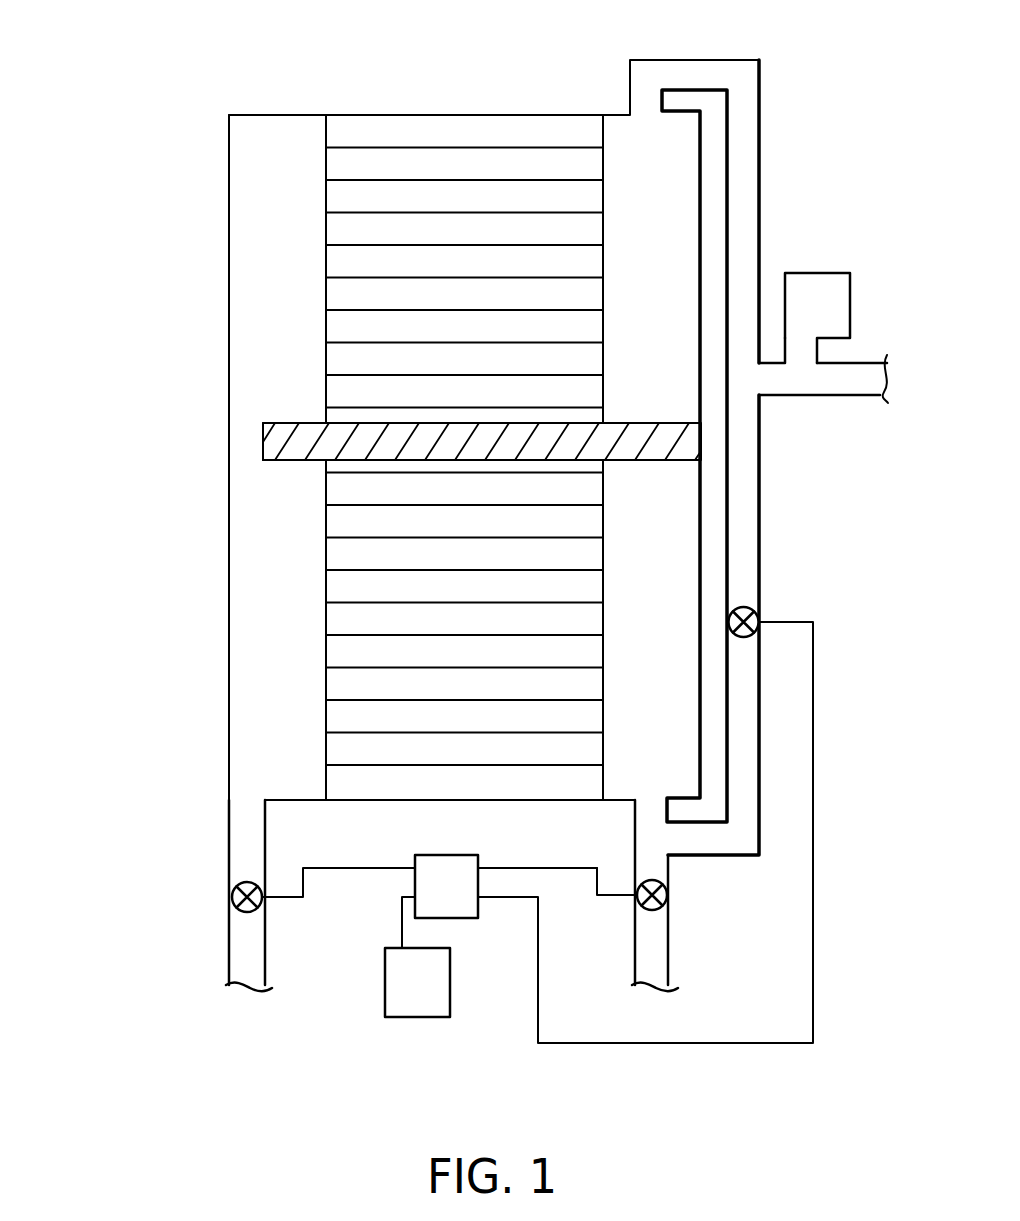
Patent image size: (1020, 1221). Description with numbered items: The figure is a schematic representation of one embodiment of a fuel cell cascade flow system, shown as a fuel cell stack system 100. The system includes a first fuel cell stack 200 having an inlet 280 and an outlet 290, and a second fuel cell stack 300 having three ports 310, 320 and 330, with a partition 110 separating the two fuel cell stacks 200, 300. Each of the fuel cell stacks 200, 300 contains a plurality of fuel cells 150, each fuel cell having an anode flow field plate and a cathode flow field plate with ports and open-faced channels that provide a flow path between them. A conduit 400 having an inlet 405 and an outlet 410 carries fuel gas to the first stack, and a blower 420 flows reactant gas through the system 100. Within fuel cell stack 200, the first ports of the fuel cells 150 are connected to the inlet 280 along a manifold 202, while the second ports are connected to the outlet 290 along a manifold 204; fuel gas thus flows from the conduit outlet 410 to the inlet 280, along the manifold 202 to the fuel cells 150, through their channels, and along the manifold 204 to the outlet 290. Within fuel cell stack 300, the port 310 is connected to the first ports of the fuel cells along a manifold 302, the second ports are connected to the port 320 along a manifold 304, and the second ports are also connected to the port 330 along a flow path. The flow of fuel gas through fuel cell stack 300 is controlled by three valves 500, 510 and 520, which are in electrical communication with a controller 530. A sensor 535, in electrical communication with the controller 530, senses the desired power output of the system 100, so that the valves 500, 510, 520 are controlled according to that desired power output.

The fuel cell stack system 100 is at (52, 269).
The partition 110 is at (288, 423).
The fuel cells 150 is at (327, 730).
The fuel cell stack 200 is at (228, 207).
The manifold 202 is at (622, 130).
The manifold 204 is at (280, 128).
The inlet 280 is at (647, 100).
The outlet 290 is at (257, 448).
The fuel cell stack 300 is at (230, 527).
The manifold 302 is at (648, 548).
The manifold 304 is at (260, 570).
The port 310 is at (652, 785).
The port 320 is at (245, 773).
The port 330 is at (247, 467).
The conduit 400 is at (817, 380).
The inlet 405 is at (873, 377).
The outlet 410 is at (760, 410).
The blower 420 is at (799, 317).
The valve 500 is at (760, 615).
The valve 510 is at (668, 900).
The valve 520 is at (234, 897).
The controller 530 is at (429, 901).
The sensor 535 is at (399, 997).